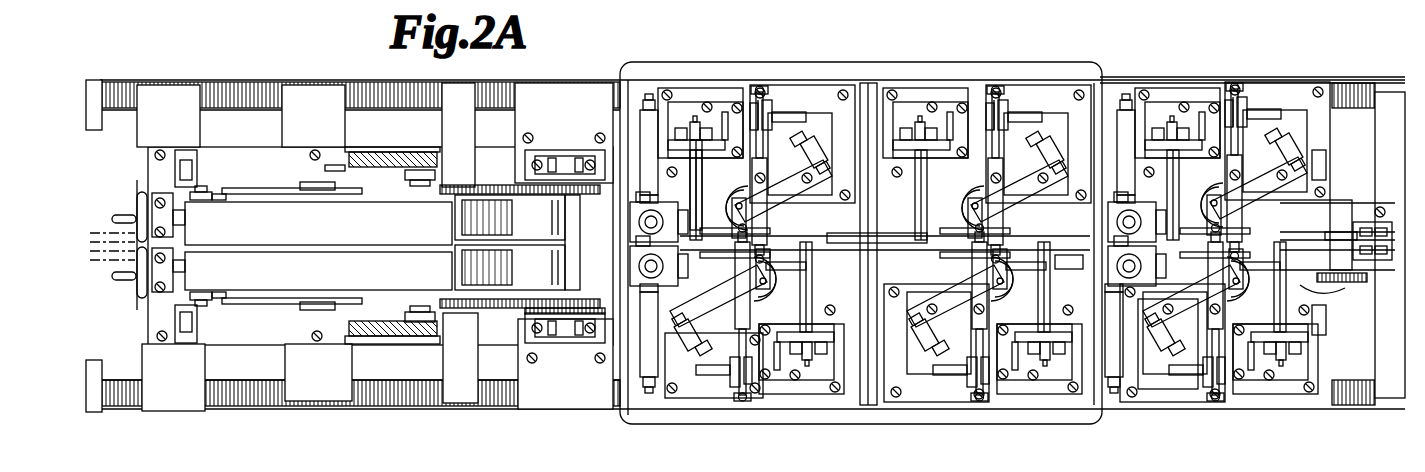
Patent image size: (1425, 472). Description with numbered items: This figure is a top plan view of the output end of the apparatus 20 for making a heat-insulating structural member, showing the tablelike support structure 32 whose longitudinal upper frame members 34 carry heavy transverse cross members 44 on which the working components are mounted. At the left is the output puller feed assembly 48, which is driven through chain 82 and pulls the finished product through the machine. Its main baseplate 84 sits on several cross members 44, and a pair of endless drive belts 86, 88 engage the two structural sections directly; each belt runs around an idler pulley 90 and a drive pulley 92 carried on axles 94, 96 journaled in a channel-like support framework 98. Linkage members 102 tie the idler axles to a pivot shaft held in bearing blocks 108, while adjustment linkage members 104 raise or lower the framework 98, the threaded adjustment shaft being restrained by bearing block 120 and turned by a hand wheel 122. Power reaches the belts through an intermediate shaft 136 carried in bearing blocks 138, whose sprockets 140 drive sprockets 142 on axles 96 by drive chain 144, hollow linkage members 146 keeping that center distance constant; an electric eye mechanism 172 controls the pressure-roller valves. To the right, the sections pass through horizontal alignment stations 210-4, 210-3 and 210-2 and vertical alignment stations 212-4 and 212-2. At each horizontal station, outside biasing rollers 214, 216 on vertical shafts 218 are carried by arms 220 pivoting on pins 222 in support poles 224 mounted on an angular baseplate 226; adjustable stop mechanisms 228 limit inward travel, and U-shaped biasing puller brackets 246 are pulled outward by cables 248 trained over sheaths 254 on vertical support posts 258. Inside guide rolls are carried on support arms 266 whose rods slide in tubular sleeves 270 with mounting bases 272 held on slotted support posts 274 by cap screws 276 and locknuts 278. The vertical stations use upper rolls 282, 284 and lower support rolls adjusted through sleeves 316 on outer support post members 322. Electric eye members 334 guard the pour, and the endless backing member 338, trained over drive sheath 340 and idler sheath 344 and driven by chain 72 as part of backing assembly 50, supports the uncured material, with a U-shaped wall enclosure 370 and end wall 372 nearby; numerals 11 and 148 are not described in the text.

The section line 11 is at (822, 244).
The apparatus 20 is at (598, 30).
The tablelike support structure 32 is at (304, 430).
The upper frame member 34 is at (105, 90).
The cross member 44 is at (155, 88).
The output puller feed assembly 48 is at (258, 48).
The backing assembly 50 is at (1393, 154).
The chain 72 is at (1365, 282).
The chain 82 is at (530, 313).
The main baseplate 84 is at (160, 150).
The endless drive belt 86 is at (298, 282).
The endless drive belt 88 is at (298, 234).
The idler pulley 90 is at (216, 196).
The drive pulley 92 is at (410, 190).
The axle 94 is at (200, 190).
The axle 96 is at (418, 172).
The channel-like support framework 98 is at (215, 195).
The linkage member 102 is at (250, 190).
The adjustment linkage member 104 is at (290, 190).
The bearing block 108 is at (328, 182).
The bearing block 120 is at (152, 195).
The hand wheel 122 is at (137, 210).
The intermediate shaft 136 is at (565, 152).
The bearing block 138 is at (537, 155).
The sprocket 140 is at (560, 178).
The sprocket 142 is at (405, 158).
The drive chain 144 is at (510, 242).
The hollow linkage member 146 is at (550, 242).
The slot 148 is at (357, 150).
The electric eye mechanism 172 is at (180, 175).
The horizontal alignment station 210-2 is at (1298, 42).
The horizontal alignment station 210-3 is at (996, 39).
The horizontal alignment station 210-4 is at (737, 44).
The vertical alignment station 212-2 is at (1122, 50).
The vertical alignment station 212-4 is at (629, 50).
The outside biasing roller 214 is at (770, 280).
The outside biasing roller 216 is at (740, 200).
The vertical shaft 218 is at (539, 462).
The arm 220 is at (770, 185).
The pivot pin 222 is at (808, 110).
The support pole 224 is at (830, 165).
The angular baseplate 226 is at (815, 85).
The adjustable stop mechanism 228 is at (690, 355).
The U-shaped biasing puller bracket 246 is at (770, 248).
The cable 248 is at (762, 100).
The sheath 254 is at (753, 103).
The vertical support post 258 is at (770, 100).
The support arm 266 is at (765, 235).
The tubular sleeve 270 is at (640, 200).
The mounting base 272 is at (668, 145).
The support post 274 is at (845, 380).
The cap screw 276 is at (780, 400).
The locknut 278 is at (695, 122).
The upper roll 282 is at (630, 262).
The upper roll 284 is at (630, 222).
The sleeve 316 is at (655, 120).
The outer support post member 322 is at (650, 98).
The electric eye member 334 is at (1326, 165).
The endless backing member 338 is at (1060, 270).
The drive sheath 340 is at (1385, 205).
The idler sheath 344 is at (840, 237).
The U-shaped wall enclosure system 370 is at (1355, 198).
The end wall 372 is at (1370, 278).